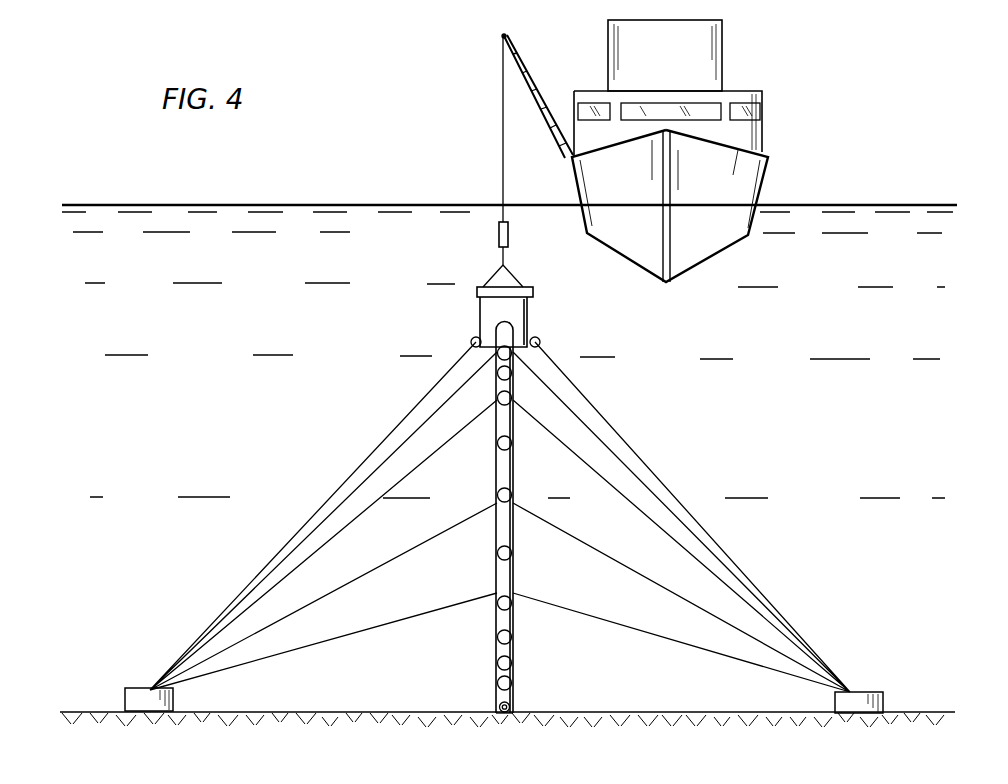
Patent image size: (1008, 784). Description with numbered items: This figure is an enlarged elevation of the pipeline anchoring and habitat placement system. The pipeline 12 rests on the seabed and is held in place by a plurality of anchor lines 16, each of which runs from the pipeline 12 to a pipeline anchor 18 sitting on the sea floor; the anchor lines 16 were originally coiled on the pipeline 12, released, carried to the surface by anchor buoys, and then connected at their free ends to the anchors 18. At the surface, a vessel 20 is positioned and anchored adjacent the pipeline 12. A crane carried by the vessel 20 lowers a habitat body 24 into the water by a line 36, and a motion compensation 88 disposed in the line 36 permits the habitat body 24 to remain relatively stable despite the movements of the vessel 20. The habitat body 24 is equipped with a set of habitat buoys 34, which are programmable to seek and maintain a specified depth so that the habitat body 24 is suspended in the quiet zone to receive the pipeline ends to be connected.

The pipeline 12 is at (514, 665).
The anchor lines 16 is at (375, 500).
The pipeline anchor 18 is at (137, 686).
The vessel 20 is at (766, 130).
The habitat body 24 is at (528, 312).
The habitat buoys 34 is at (512, 282).
The line 36 is at (503, 97).
The motion compensation 88 is at (498, 232).